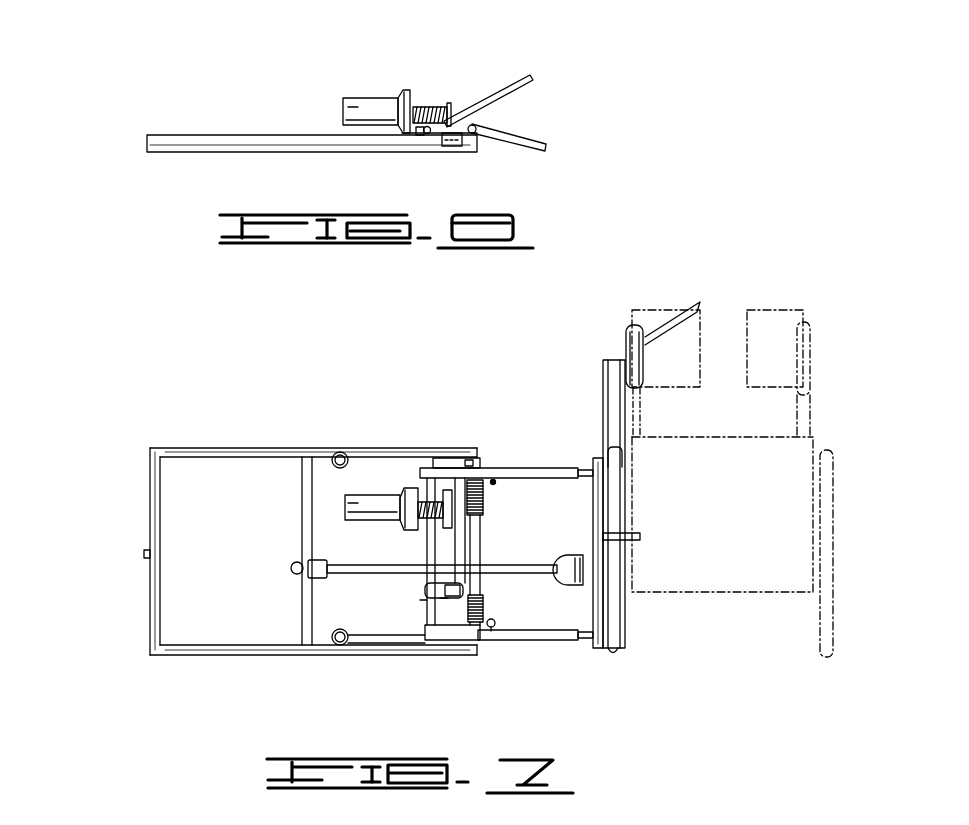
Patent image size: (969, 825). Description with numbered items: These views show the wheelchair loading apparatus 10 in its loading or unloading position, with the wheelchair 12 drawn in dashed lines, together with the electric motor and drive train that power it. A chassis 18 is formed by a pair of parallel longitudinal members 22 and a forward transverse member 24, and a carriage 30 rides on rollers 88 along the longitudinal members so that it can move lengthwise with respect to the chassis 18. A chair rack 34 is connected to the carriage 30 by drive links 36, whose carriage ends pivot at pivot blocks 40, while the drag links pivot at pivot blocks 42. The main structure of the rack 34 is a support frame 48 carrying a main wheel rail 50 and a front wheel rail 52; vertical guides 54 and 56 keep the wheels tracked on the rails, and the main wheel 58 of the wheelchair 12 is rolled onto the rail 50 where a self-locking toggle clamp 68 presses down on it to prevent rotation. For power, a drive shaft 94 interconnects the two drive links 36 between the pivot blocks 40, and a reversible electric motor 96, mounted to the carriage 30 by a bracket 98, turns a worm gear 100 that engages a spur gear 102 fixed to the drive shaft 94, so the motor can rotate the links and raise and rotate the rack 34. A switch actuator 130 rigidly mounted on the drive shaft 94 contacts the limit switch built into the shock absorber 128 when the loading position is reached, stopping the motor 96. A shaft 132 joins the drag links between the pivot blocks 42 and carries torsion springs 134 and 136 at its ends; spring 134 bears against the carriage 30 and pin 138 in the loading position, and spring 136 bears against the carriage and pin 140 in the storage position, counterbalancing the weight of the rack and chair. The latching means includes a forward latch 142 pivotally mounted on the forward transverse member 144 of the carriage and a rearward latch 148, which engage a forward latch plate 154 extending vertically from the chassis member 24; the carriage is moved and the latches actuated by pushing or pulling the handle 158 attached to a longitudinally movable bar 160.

In FIG. 7, the dispensing apparatus 10 is at (295, 427).
In FIG. 7, the wheelchair 12 is at (737, 595).
In FIG. 7, the chassis 18 is at (183, 446).
In FIG. 7, the longitudinal member 22 is at (217, 448).
In FIG. 7, the forward transverse member 24 is at (152, 620).
In FIG. 7, the carriage 30 is at (367, 645).
In FIG. 7, the chair rack 34 is at (600, 653).
In FIG. 7, the drive link 36 is at (560, 467).
In FIG. 7, the pivot block 40 is at (438, 470).
In FIG. 7, the pivot block 42 is at (481, 466).
In FIG. 7, the support frame 48 is at (597, 608).
In FIG. 7, the main wheel rail 50 is at (615, 360).
In FIG. 7, the front wheel rail 52 is at (634, 330).
In FIG. 7, the vertical guide 54 is at (626, 393).
In FIG. 7, the vertical guide 56 is at (700, 303).
In FIG. 7, the main wheel 58 is at (636, 447).
In FIG. 7, the toggle clamp 68 is at (628, 532).
In FIG. 7, the roller 88 is at (340, 452).
In FIG. 6, the drive shaft 94 is at (428, 135).
In FIG. 7, the drive shaft 94 is at (418, 612).
In FIG. 6, the reversible electric motor 96 is at (370, 104).
In FIG. 7, the reversible electric motor 96 is at (365, 500).
In FIG. 6, the bracket 98 is at (402, 134).
In FIG. 7, the bracket 98 is at (418, 490).
In FIG. 6, the worm gear 100 is at (426, 110).
In FIG. 7, the worm gear 100 is at (427, 526).
In FIG. 6, the spur gear 102 is at (415, 132).
In FIG. 6, the shock absorber 128 is at (462, 141).
In FIG. 7, the shock absorber 128 is at (446, 600).
In FIG. 6, the switch actuator 130 is at (480, 123).
In FIG. 7, the switch actuator 130 is at (425, 592).
In FIG. 7, the shaft 132 is at (482, 531).
In FIG. 7, the torsion spring 134 is at (484, 615).
In FIG. 7, the torsion spring 136 is at (484, 501).
In FIG. 7, the pin 138 is at (493, 630).
In FIG. 7, the pin 140 is at (497, 480).
In FIG. 7, the forward latch 142 is at (297, 577).
In FIG. 7, the forward transverse member 144 is at (305, 478).
In FIG. 7, the rearward latch 148 is at (487, 568).
In FIG. 7, the forward latch plate 154 is at (147, 552).
In FIG. 7, the handle 158 is at (578, 555).
In FIG. 7, the longitudinally movable bar 160 is at (343, 565).